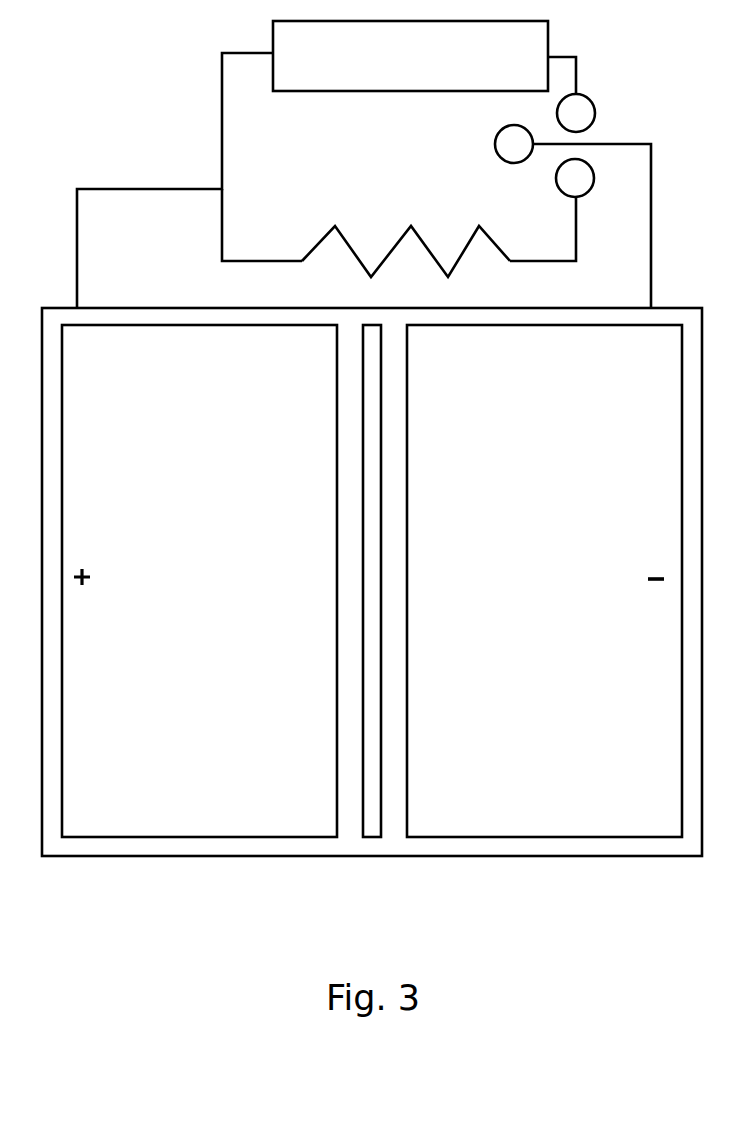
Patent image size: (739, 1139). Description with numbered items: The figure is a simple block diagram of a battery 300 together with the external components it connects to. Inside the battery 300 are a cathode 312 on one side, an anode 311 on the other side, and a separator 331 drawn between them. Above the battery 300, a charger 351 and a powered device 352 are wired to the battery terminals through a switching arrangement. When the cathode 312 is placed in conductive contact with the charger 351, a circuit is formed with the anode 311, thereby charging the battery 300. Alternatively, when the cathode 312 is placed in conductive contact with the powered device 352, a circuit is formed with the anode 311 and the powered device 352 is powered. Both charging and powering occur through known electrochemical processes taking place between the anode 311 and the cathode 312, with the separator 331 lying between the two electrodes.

The battery 300 is at (252, 885).
The anode 311 is at (538, 837).
The cathode 312 is at (123, 837).
The separator 331 is at (370, 837).
The charger 351 is at (390, 91).
The powered device 352 is at (318, 244).